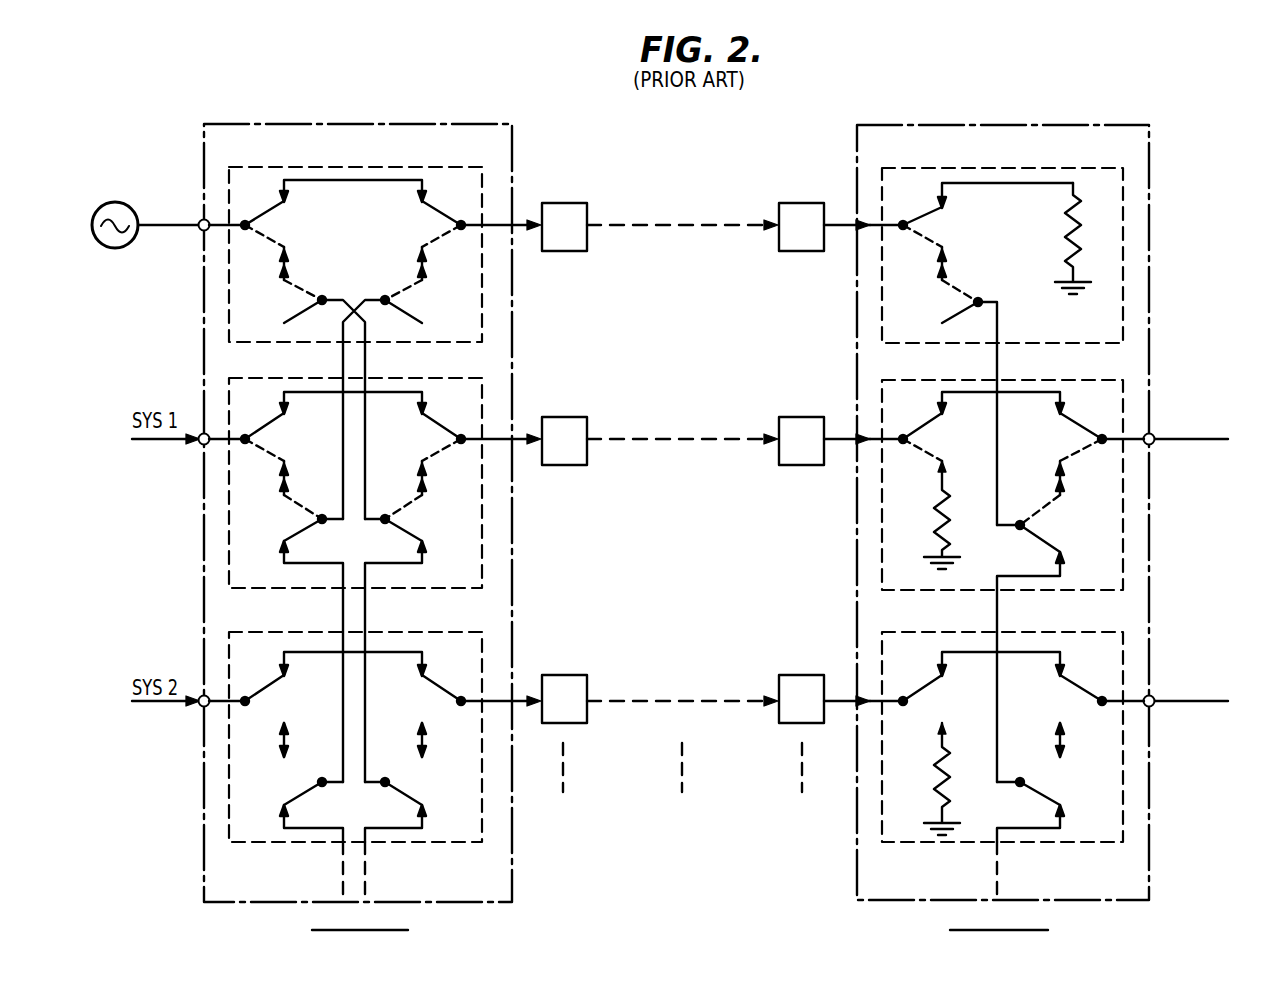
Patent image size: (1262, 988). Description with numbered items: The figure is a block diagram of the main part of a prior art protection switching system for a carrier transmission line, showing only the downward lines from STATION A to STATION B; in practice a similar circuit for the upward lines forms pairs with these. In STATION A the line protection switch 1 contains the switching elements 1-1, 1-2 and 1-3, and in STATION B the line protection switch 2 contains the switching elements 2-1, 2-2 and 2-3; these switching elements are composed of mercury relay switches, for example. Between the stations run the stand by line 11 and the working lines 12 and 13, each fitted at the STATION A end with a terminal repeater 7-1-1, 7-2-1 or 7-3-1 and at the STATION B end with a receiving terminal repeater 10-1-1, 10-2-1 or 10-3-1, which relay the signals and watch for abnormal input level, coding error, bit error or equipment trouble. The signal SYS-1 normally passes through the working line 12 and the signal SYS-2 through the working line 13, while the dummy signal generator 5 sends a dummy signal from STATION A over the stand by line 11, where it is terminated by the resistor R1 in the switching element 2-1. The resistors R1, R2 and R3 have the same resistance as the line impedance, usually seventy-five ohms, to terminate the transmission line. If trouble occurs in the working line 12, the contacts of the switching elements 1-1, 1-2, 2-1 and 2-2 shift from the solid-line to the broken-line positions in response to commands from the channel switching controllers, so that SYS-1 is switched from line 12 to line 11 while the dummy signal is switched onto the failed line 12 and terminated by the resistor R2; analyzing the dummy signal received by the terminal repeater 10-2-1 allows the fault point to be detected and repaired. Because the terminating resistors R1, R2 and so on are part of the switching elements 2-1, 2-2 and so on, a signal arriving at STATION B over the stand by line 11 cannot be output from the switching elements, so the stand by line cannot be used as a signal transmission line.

The dummy signal generator 5 is at (96, 209).
The line protection switch 1 is at (357, 124).
The switching element 1-1 is at (295, 167).
The switching element 1-2 is at (300, 378).
The switching element 1-3 is at (248, 632).
The terminal repeater 7-1-1 is at (572, 203).
The terminal repeater 7-2-1 is at (560, 417).
The terminal repeater 7-3-1 is at (570, 675).
The terminal repeater 10-1-1 is at (786, 203).
The terminal repeater 10-2-1 is at (786, 417).
The terminal repeater 10-3-1 is at (795, 675).
The stand by line 11 is at (684, 225).
The working line 12 is at (637, 439).
The working line 13 is at (653, 700).
The line protection switch 2 is at (1090, 125).
The switching element 2-1 is at (996, 329).
The switching element 2-2 is at (1007, 566).
The switching element 2-3 is at (1007, 747).
The terminating resistor R1 is at (1068, 211).
The terminating resistor R2 is at (945, 498).
The terminating resistor R3 is at (935, 795).